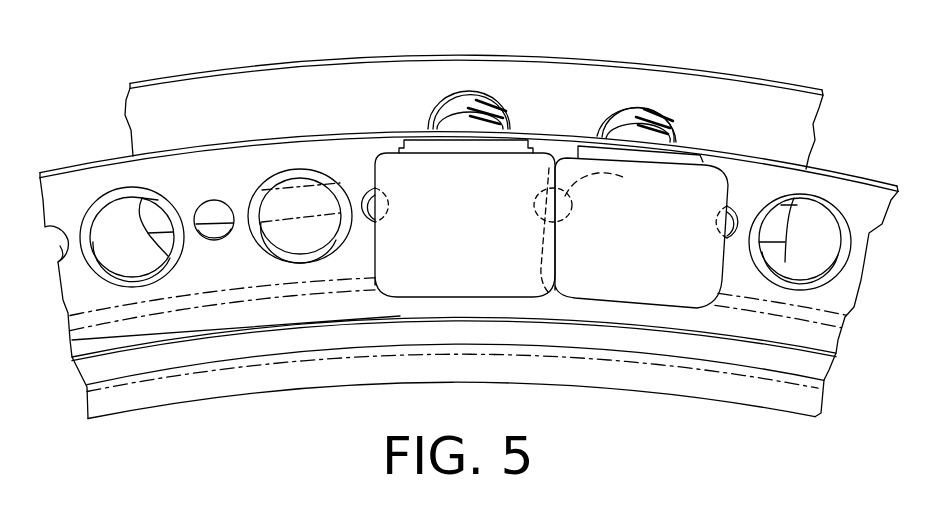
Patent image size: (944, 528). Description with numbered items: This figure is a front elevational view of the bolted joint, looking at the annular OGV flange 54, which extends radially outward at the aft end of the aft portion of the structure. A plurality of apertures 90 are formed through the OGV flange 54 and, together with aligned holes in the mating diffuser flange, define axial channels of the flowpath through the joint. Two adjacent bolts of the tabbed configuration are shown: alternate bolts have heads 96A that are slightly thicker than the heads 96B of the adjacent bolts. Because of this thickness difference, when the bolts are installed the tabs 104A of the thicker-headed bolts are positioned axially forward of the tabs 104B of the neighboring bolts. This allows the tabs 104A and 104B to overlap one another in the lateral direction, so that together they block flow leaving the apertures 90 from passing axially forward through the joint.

The OGV flange 54 is at (231, 187).
The apertures 90 is at (625, 178).
The heads of bolts 74A 96A is at (493, 241).
The heads of bolts 74B 96B is at (668, 254).
The tabs of bolts 74A 104A is at (383, 157).
The tabs of bolts 74B 104B is at (712, 177).